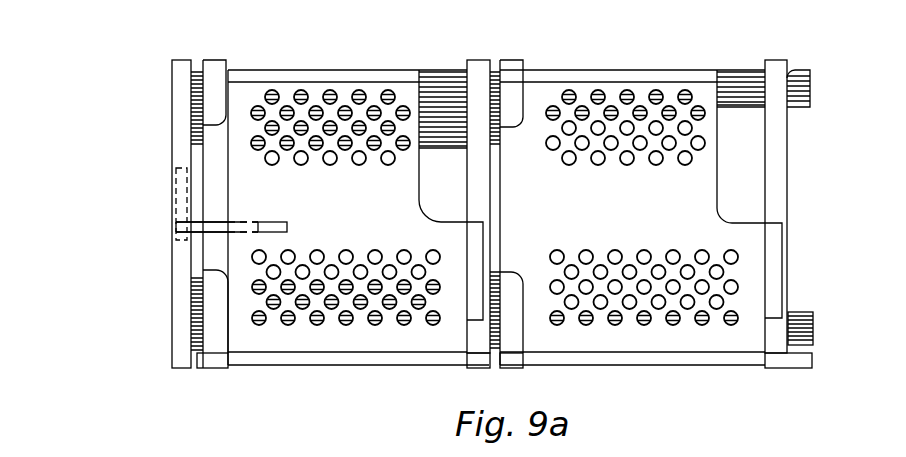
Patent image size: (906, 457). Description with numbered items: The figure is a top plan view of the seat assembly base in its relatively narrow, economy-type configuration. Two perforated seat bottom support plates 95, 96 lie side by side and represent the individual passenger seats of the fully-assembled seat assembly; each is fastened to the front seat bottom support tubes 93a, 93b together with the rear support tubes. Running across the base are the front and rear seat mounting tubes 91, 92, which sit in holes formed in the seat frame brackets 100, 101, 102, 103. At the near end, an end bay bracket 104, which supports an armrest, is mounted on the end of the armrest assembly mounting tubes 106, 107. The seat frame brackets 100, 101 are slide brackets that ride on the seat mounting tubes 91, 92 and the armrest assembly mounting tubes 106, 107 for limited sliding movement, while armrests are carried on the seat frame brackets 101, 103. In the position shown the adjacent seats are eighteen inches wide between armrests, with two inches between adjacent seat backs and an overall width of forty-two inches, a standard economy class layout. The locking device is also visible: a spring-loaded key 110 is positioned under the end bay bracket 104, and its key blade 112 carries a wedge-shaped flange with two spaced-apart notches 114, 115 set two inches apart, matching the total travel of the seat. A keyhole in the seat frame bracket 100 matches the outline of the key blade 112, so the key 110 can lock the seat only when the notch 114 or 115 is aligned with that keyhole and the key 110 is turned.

The front seat mounting tube 91 is at (813, 317).
The rear seat mounting tube 92 is at (803, 77).
The front seat bottom support tube 93a is at (282, 355).
The front seat bottom support tube 93b is at (728, 360).
The perforated seat bottom support plate 95 is at (289, 207).
The perforated seat bottom support plate 96 is at (643, 236).
The seat frame bracket 100 is at (212, 68).
The seat frame bracket 101 is at (478, 64).
The seat frame bracket 102 is at (511, 64).
The seat frame bracket 103 is at (778, 64).
The end bay bracket 104 is at (178, 73).
The armrest assembly mounting tube 106 is at (430, 123).
The armrest assembly mounting tube 107 is at (488, 298).
The spring-loaded key 110 is at (215, 124).
The key blade 112 is at (278, 222).
The notch 114 is at (252, 222).
The notch 115 is at (230, 222).